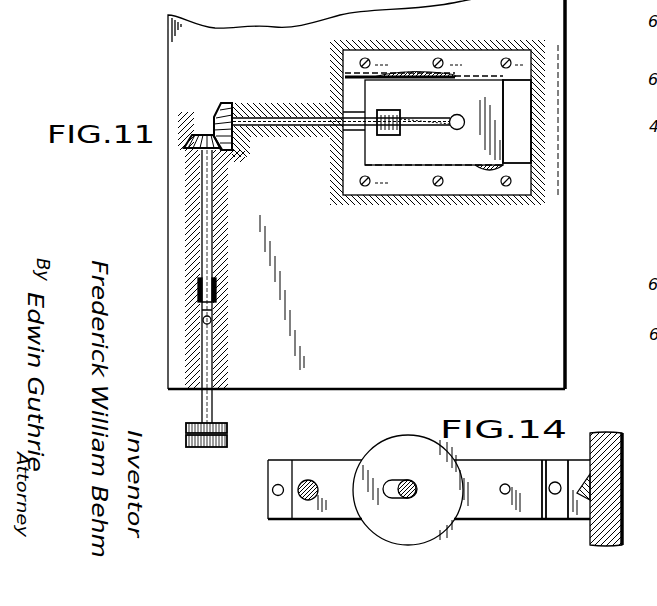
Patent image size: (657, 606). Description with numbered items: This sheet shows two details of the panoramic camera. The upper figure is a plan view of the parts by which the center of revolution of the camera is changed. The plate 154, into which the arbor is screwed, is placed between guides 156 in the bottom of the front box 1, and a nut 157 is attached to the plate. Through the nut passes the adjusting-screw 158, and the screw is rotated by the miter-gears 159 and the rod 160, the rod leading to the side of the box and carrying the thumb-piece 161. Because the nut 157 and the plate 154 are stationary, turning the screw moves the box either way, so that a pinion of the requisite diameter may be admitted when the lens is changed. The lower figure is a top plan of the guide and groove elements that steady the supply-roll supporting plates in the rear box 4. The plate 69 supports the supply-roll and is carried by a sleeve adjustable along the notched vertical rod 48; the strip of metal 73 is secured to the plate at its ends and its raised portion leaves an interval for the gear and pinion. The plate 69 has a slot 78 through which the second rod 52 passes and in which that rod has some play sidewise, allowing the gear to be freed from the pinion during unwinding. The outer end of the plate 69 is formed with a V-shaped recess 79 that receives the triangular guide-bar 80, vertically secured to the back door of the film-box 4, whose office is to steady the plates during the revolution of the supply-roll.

In FIG. 11, the front box 1 is at (172, 55).
In FIG. 11, the plate 154 is at (457, 114).
In FIG. 11, the guides 156 is at (338, 92).
In FIG. 11, the nut 157 is at (392, 106).
In FIG. 11, the adjusting-screw 158 is at (418, 128).
In FIG. 11, the miter-gears 159 is at (225, 113).
In FIG. 11, the rod 160 is at (200, 227).
In FIG. 11, the thumb-piece 161 is at (228, 430).
In FIG. 14, the rear box 4 is at (613, 434).
In FIG. 14, the vertical rod 48 is at (310, 480).
In FIG. 14, the second rod 52 is at (418, 489).
In FIG. 14, the plate 69 is at (578, 520).
In FIG. 14, the strip of metal 73 is at (429, 490).
In FIG. 14, the slot 78 is at (395, 496).
In FIG. 14, the V-shaped recess 79 is at (555, 503).
In FIG. 14, the triangular guide-bar 80 is at (592, 490).